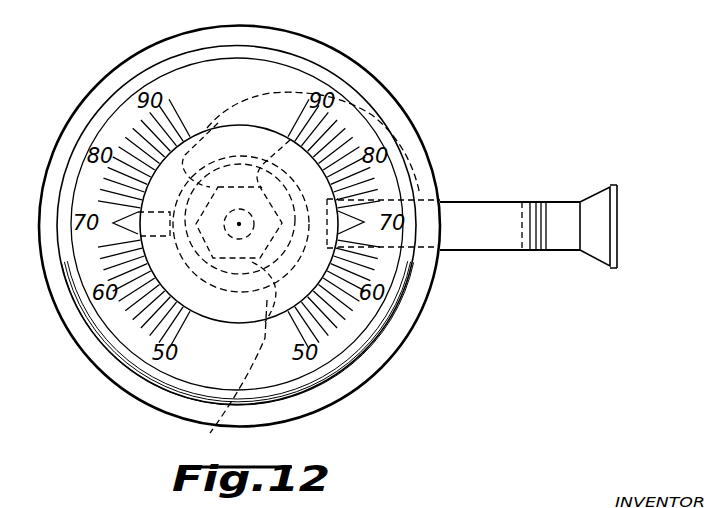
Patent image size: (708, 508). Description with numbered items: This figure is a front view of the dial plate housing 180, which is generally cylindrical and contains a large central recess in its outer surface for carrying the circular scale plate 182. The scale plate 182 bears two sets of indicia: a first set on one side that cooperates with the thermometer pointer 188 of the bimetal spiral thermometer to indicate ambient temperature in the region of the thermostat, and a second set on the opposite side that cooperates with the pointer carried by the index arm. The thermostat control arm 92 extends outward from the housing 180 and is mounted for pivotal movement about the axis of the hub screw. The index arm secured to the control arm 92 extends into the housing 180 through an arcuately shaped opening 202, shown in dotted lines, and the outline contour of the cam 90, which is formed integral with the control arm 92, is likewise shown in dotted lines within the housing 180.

The dial plate housing 180 is at (404, 105).
The scale plate 182 is at (188, 360).
The thermometer pointer 188 is at (140, 231).
The arcuately shaped opening 202 is at (250, 178).
The cam 90 is at (240, 102).
The thermostat control arm 92 is at (513, 208).